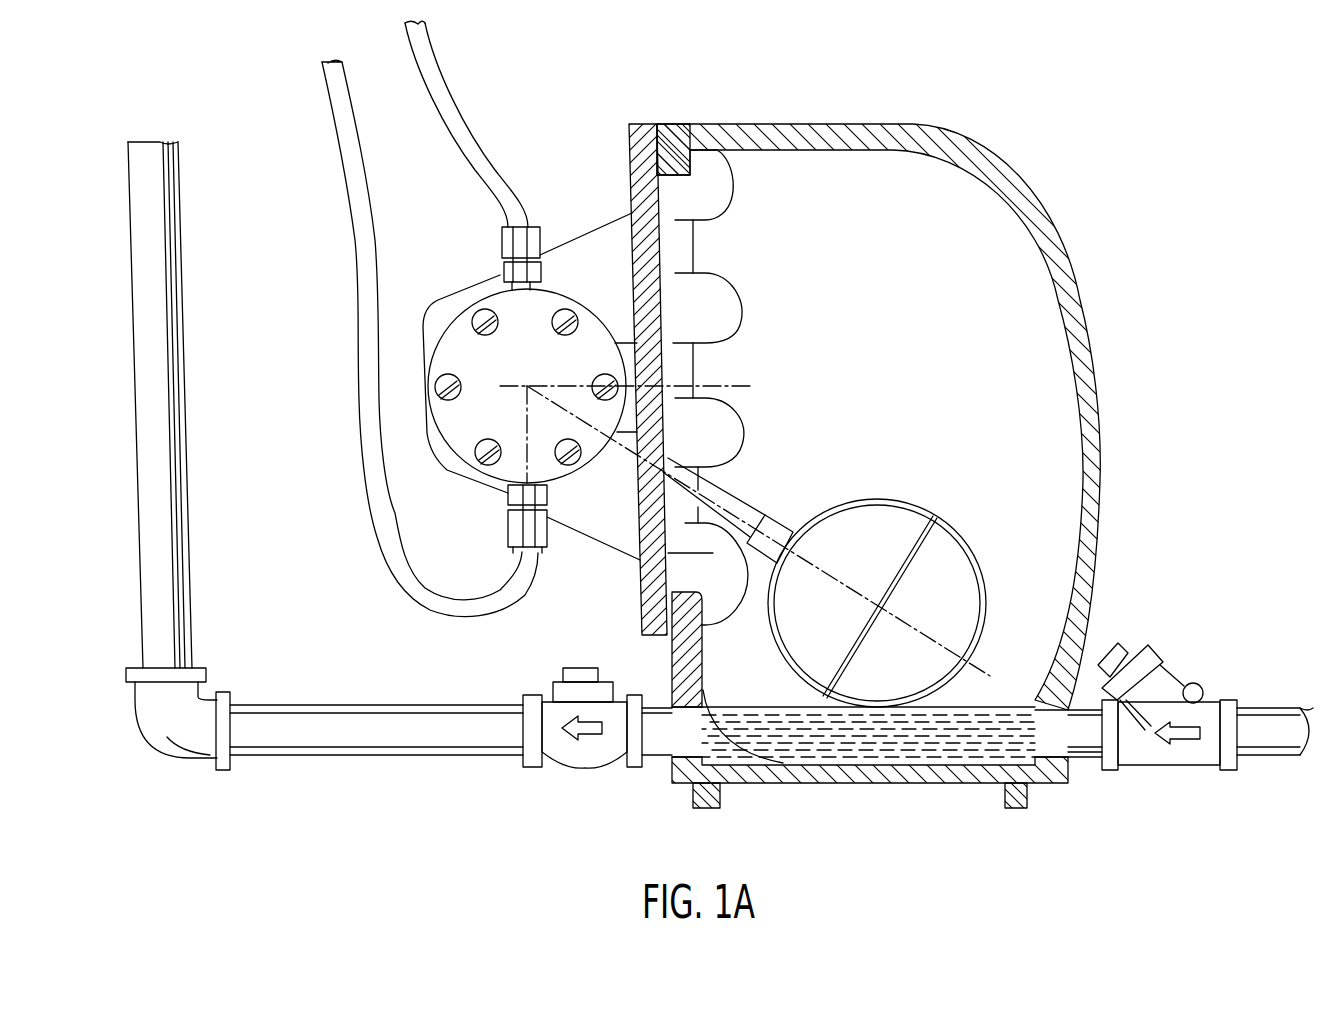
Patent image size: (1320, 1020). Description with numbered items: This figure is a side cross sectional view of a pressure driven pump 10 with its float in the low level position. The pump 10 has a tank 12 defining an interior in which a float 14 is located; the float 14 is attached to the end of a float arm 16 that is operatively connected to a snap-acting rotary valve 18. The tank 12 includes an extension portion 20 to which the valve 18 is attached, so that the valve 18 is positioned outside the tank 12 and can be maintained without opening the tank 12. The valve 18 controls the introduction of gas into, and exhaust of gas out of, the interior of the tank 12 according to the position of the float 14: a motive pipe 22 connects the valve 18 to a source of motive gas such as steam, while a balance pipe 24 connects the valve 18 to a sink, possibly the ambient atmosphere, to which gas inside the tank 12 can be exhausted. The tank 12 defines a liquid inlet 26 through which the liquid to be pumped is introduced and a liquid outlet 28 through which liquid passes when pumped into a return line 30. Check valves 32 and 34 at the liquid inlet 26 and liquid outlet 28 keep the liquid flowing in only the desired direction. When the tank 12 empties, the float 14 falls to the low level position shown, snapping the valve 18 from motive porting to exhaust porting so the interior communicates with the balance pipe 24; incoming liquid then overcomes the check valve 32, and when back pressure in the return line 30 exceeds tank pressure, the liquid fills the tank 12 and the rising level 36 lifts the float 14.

The pressure driven pump 10 is at (1130, 347).
The tank 12 is at (823, 126).
The float 14 is at (832, 520).
The float arm 16 is at (732, 498).
The snap-acting rotary valve 18 is at (450, 353).
The extension portion 20 is at (576, 262).
The motive pipe 22 is at (417, 582).
The balance pipe 24 is at (494, 151).
The liquid inlet 26 is at (1058, 737).
The liquid outlet 28 is at (678, 742).
The return line 30 is at (148, 413).
The check valve 32 is at (1203, 715).
The check valve 34 is at (590, 698).
The level of the liquid 36 is at (772, 703).